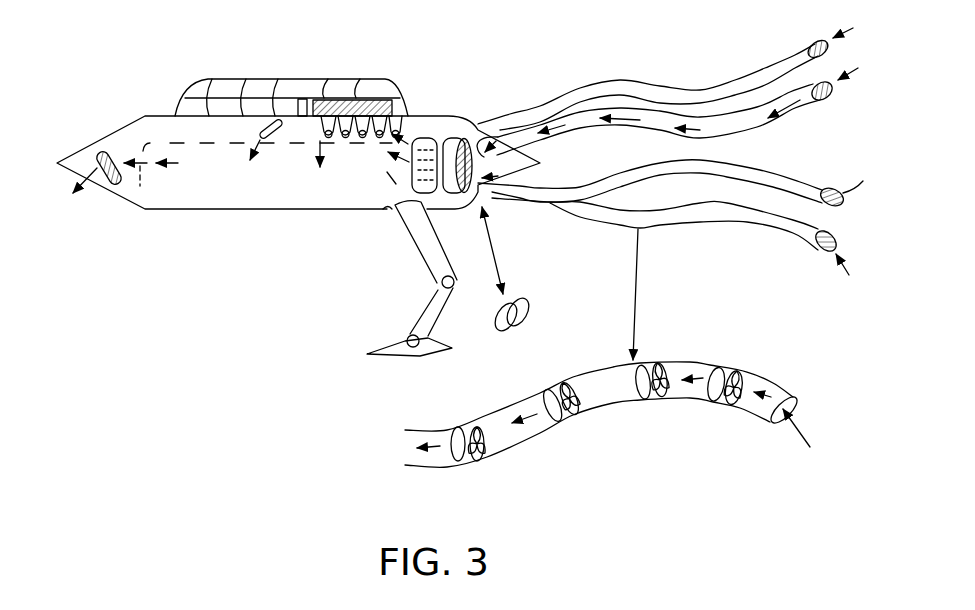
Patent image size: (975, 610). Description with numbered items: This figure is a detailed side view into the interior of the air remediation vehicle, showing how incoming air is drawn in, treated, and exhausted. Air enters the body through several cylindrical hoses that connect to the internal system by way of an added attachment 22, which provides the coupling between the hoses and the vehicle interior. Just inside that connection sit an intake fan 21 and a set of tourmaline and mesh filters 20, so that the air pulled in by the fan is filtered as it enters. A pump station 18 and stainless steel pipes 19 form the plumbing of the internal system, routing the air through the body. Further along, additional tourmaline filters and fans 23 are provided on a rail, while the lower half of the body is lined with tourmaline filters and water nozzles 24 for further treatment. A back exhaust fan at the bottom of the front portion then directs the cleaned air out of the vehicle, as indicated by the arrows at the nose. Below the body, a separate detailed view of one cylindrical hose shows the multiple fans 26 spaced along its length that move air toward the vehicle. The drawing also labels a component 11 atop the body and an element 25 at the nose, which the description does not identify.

The dome / cover 11 is at (247, 88).
The pump station 18 is at (357, 100).
The stainless steel pipes 19 is at (297, 99).
The tourmaline and mesh filters 20 is at (420, 132).
The intake fan 21 is at (463, 140).
The added attachment 22 is at (512, 300).
The additional tourmaline filters and fans 23 is at (308, 190).
The tourmaline filters and water nozzles 24 is at (197, 198).
The outlet flap 25 is at (105, 152).
The fans 26 is at (652, 410).